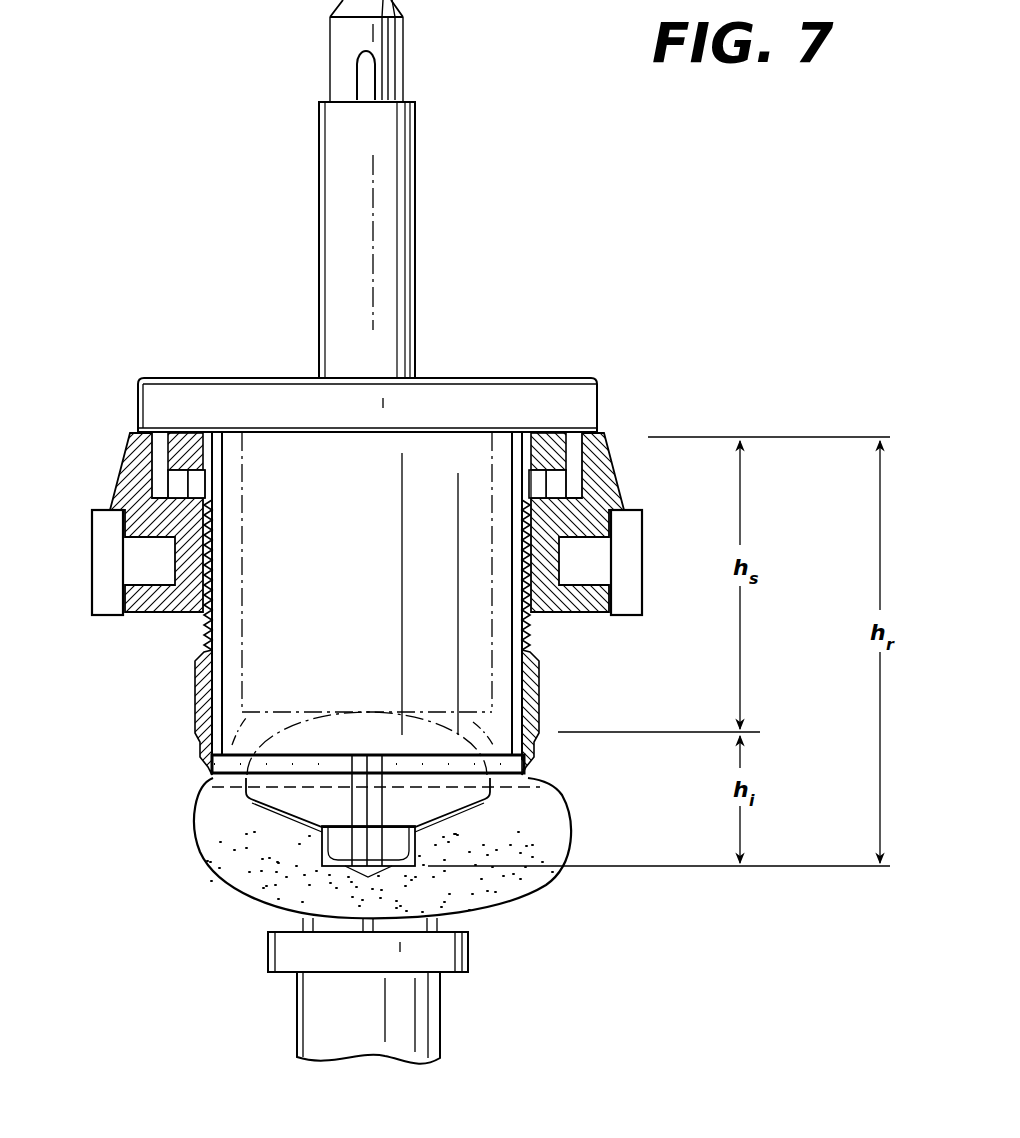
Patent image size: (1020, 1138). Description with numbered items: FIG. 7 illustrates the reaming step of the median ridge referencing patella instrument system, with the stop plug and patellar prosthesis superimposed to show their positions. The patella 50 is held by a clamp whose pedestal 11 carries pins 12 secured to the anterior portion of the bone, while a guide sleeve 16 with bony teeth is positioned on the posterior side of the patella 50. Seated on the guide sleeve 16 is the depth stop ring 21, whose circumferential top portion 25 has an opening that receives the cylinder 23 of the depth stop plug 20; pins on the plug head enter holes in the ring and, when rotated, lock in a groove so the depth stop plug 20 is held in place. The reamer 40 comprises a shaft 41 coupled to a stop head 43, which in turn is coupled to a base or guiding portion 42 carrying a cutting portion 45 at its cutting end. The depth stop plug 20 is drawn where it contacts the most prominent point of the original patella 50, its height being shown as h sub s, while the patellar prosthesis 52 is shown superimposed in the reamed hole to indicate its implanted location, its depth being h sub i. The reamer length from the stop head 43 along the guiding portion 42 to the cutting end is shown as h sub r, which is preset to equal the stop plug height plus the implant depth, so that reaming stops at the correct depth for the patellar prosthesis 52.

The pedestal 11 is at (298, 1025).
The pins 12 is at (470, 918).
The guide sleeve 16 is at (540, 672).
The depth stop plug 20 is at (283, 664).
The depth stop ring 21 is at (113, 478).
The cylinder 23 is at (246, 630).
The circumferential top portion 25 is at (136, 432).
The reamer 40 is at (378, 189).
The shaft 41 is at (319, 232).
The guiding portion 42 is at (527, 490).
The stop head 43 is at (250, 378).
The cutting portion 45 is at (478, 816).
The patella 50 is at (200, 846).
The patellar prosthesis 52 is at (382, 712).